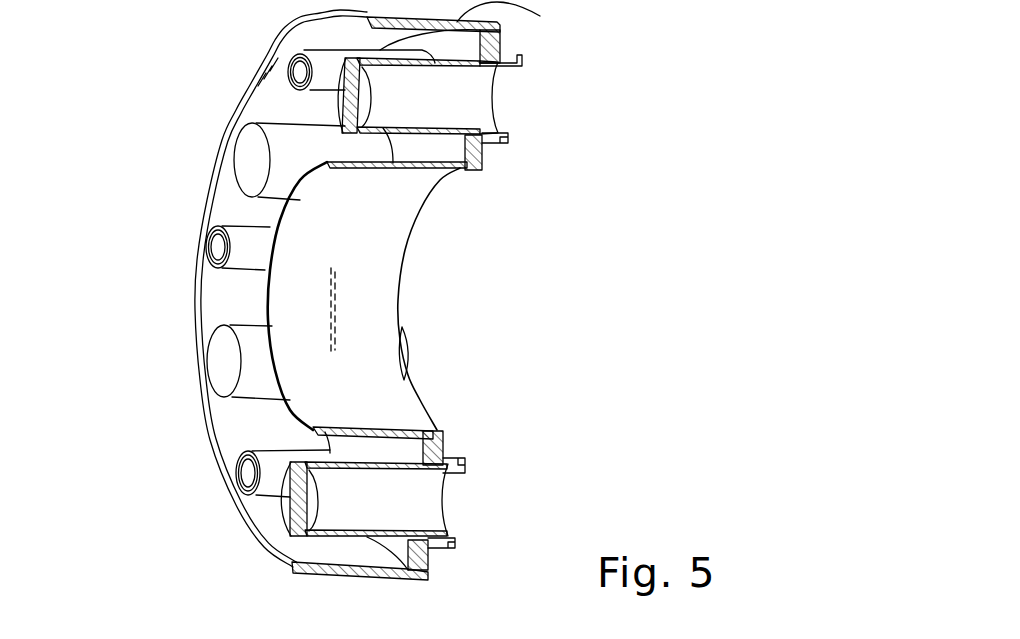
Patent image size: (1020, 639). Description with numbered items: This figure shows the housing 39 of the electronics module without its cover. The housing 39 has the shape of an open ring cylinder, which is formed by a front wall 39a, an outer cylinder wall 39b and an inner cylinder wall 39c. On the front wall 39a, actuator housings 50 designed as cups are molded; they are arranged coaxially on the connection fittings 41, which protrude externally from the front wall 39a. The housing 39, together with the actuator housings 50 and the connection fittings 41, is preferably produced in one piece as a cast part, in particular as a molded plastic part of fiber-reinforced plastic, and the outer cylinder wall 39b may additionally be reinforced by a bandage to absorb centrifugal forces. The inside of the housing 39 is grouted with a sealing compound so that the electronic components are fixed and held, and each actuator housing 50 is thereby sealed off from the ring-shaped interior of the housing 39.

The housing 39 is at (197, 153).
The front wall 39a is at (480, 157).
The outer cylinder wall 39b is at (540, 16).
The inner cylinder wall 39c is at (360, 268).
The connection fitting 41 is at (504, 60).
The actuator housing 50 is at (345, 105).